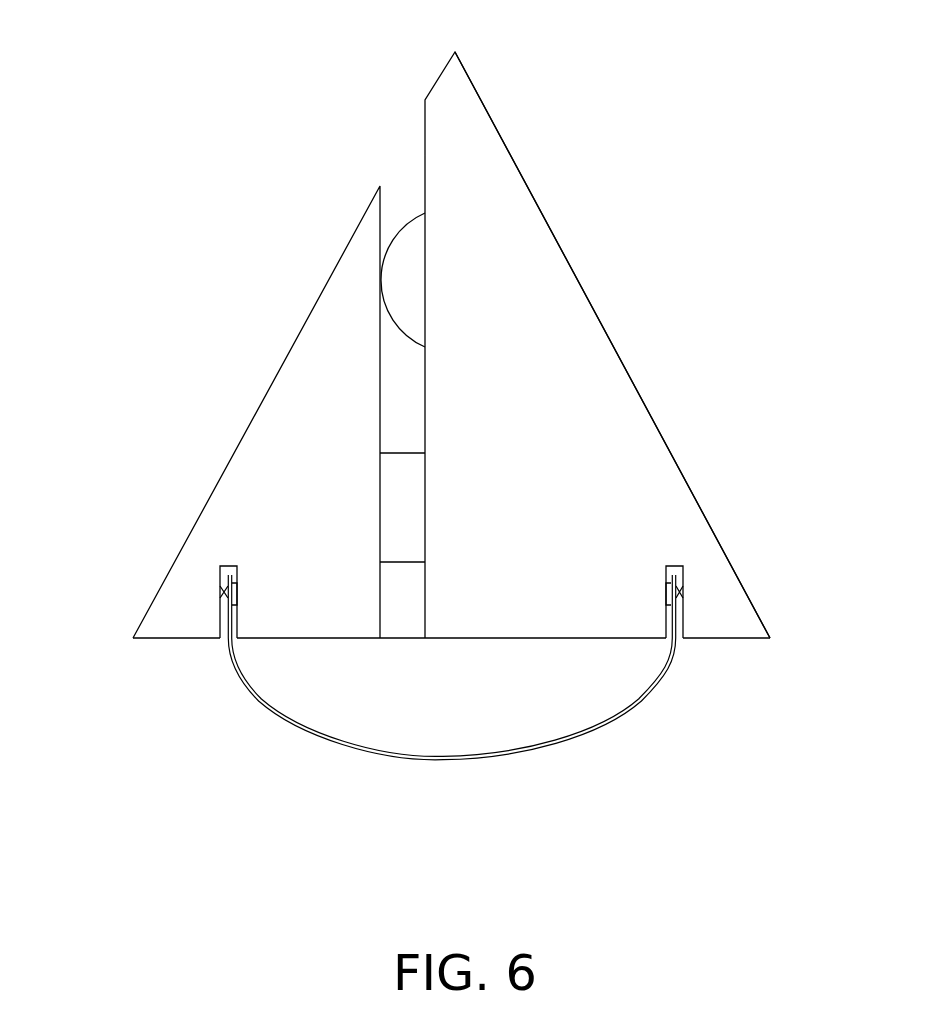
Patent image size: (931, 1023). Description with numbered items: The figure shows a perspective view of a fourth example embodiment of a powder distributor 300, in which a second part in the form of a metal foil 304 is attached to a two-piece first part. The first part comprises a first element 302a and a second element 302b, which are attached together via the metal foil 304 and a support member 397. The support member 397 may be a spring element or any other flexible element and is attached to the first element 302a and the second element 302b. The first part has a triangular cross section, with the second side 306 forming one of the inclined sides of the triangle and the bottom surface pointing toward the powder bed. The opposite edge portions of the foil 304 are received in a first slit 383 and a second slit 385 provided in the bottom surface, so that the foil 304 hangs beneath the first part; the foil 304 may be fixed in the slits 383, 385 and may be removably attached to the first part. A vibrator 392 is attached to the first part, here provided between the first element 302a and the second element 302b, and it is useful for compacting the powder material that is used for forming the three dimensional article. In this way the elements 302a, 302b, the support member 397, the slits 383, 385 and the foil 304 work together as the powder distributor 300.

The powder distributor 300 is at (178, 169).
The first element 302a is at (322, 445).
The second element 302b is at (593, 433).
The second side 306 is at (600, 317).
The vibrator 392 is at (397, 508).
The support member 397 is at (406, 217).
The first slit 383 is at (220, 570).
The second slit 385 is at (683, 573).
The foil 304 is at (610, 722).